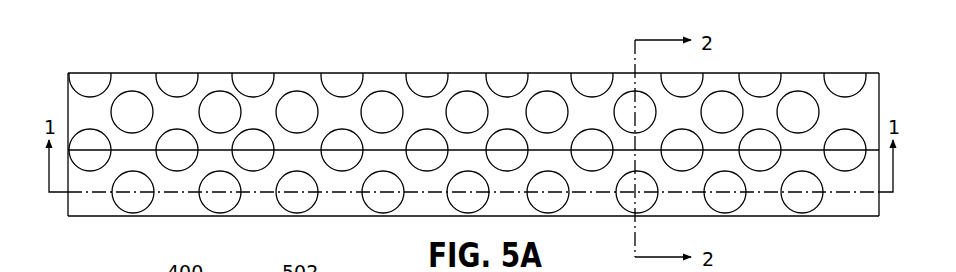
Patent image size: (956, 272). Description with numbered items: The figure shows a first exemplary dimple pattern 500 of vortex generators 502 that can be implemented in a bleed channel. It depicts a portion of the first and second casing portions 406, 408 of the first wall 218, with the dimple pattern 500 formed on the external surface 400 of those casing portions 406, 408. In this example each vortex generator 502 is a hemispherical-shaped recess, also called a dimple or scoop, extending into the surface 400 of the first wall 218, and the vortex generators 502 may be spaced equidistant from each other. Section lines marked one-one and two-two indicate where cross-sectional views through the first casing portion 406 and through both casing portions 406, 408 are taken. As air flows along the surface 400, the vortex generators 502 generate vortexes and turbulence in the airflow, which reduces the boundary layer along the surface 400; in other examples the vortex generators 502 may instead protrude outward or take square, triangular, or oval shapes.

The dimple pattern 500 is at (150, 44).
The external surface 400 is at (220, 80).
The first wall 218 is at (390, 85).
The second casing portion 408 is at (87, 115).
The first casing portion 406 is at (87, 200).
The vortex generator 502 is at (301, 105).